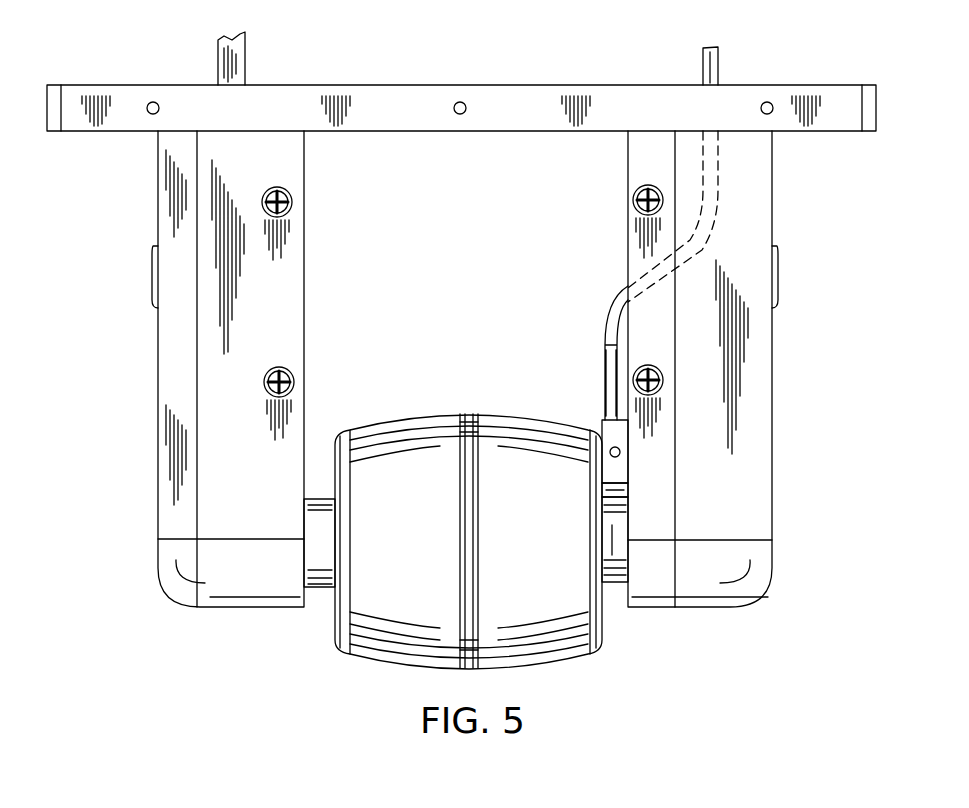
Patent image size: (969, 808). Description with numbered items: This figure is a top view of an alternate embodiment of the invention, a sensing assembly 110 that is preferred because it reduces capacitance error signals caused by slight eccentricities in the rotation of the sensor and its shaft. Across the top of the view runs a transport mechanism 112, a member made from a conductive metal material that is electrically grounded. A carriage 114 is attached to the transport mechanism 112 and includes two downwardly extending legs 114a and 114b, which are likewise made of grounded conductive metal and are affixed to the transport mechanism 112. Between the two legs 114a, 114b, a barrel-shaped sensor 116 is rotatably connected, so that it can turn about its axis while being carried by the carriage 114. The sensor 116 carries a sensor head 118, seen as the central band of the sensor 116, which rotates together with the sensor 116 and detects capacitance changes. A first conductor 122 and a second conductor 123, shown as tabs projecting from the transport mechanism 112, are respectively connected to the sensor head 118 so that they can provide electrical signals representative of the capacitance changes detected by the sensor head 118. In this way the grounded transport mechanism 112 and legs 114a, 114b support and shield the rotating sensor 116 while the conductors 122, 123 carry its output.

The sensing assembly 110 is at (458, 310).
The transport mechanism 112 is at (128, 78).
The carriage 114 is at (465, 369).
The carriage leg 114a is at (304, 305).
The carriage leg 114b is at (628, 272).
The sensor 116 is at (530, 412).
The sensor head 118 is at (467, 408).
The first conductor 122 is at (245, 58).
The second conductor 123 is at (718, 62).